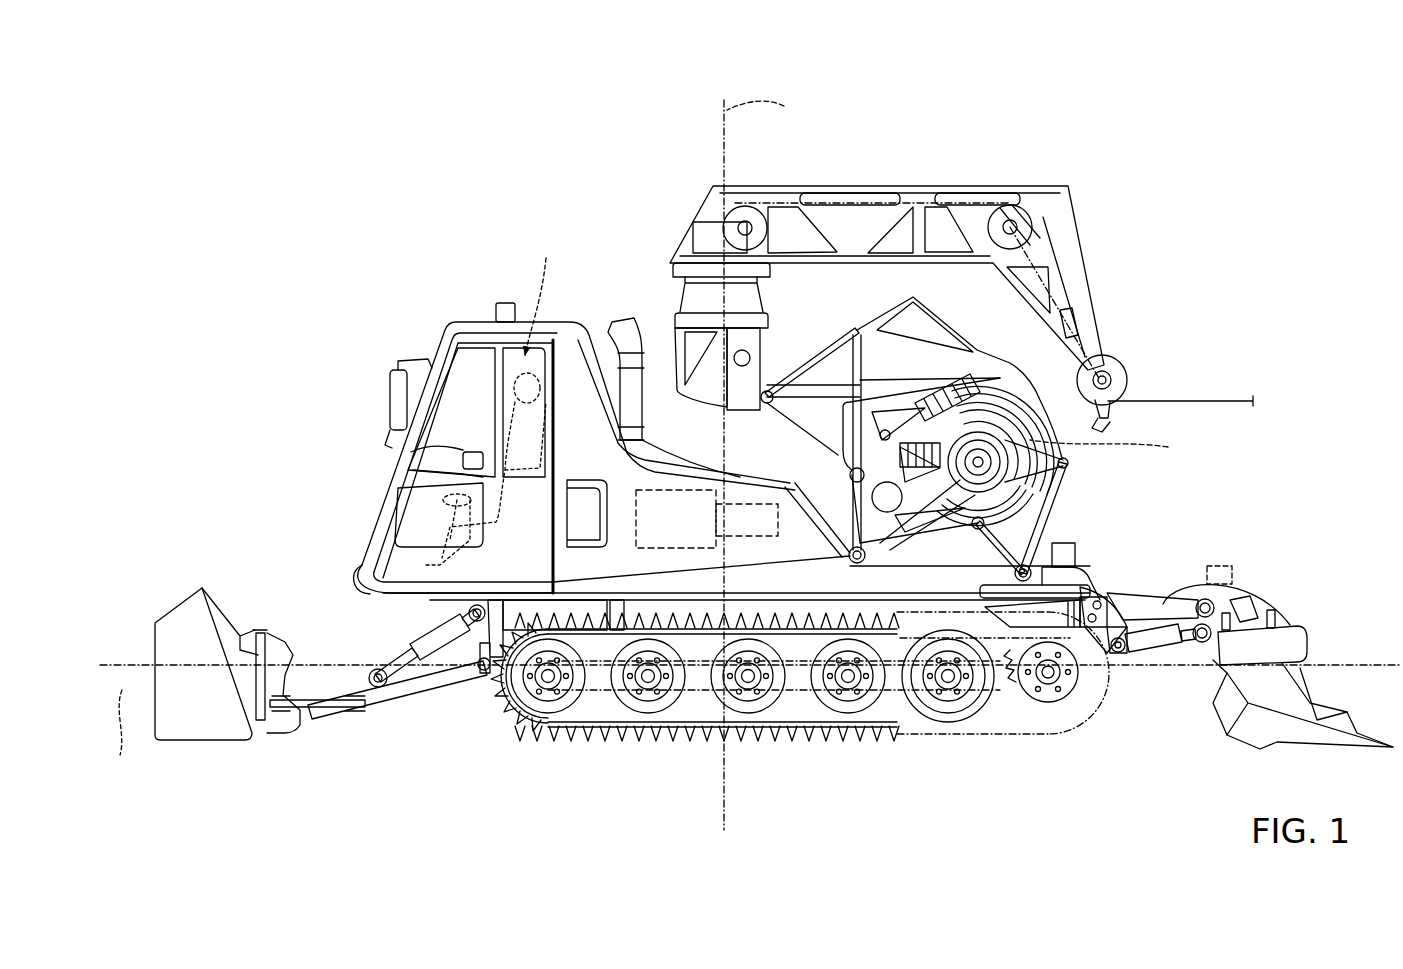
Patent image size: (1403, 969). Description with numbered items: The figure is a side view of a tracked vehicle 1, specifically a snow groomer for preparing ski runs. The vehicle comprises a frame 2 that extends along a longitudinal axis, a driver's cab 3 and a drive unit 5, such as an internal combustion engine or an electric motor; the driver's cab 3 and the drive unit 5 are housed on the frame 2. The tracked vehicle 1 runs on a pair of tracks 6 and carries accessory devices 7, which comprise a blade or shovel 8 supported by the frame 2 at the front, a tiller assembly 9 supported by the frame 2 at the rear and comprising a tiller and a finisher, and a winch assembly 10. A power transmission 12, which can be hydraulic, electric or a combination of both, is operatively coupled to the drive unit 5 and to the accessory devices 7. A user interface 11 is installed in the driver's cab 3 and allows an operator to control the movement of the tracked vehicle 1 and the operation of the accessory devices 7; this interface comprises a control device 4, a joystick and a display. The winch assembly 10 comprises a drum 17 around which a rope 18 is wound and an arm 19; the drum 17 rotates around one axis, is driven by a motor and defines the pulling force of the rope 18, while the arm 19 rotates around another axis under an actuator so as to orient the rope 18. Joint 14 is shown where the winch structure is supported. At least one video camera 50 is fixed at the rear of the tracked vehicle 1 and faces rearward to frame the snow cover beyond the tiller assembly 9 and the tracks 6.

The tracked vehicle 1 is at (432, 208).
The frame 2 is at (1073, 574).
The driver's cab 3 is at (559, 390).
The control device 4 is at (1038, 690).
The drive unit 5 is at (691, 505).
The tracks 6 is at (800, 743).
The accessory devices 7 is at (1250, 573).
The blade 8 is at (184, 603).
The tiller assembly 9 is at (1277, 690).
The winch assembly 10 is at (898, 253).
The user interface 11 is at (462, 458).
The power transmission 12 is at (760, 498).
The winch arm support joint 14 is at (858, 328).
The drum 17 is at (1060, 490).
The rope 18 is at (1190, 400).
The arm 19 is at (1042, 197).
The video camera 50 is at (1067, 555).